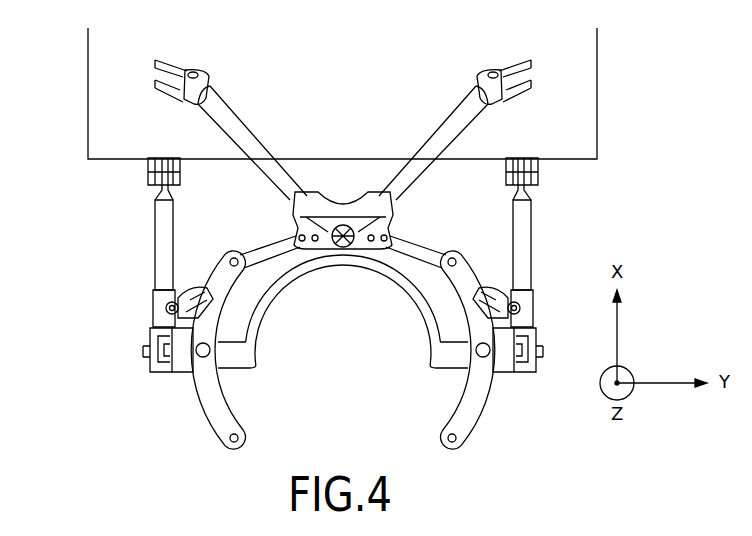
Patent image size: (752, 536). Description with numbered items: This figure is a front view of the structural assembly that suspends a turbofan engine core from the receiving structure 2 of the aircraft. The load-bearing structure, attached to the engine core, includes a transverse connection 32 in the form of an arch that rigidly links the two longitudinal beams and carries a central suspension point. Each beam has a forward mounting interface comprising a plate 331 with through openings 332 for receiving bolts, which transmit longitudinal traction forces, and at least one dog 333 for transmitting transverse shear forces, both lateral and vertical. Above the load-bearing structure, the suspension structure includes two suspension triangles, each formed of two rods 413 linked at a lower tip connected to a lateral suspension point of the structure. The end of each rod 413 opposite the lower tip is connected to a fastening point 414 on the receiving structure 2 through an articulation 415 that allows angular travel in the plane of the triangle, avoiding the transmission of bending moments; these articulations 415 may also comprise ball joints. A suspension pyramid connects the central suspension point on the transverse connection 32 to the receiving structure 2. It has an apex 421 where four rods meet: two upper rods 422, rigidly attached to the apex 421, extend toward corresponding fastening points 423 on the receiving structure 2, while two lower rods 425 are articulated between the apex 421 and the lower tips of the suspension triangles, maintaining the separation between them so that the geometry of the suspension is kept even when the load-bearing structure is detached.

The receiving structure 2 is at (100, 84).
The transverse connection 32 is at (270, 285).
The plate 331 is at (214, 403).
The through openings 332 is at (240, 437).
The dog 333 is at (211, 349).
The rod 413 is at (158, 255).
The fastening point 414 is at (342, 265).
The articulation 415 is at (179, 168).
The apex 421 is at (338, 190).
The upper rods 422 is at (244, 128).
The fastening points 423 is at (201, 73).
The lower rods 425 is at (264, 260).